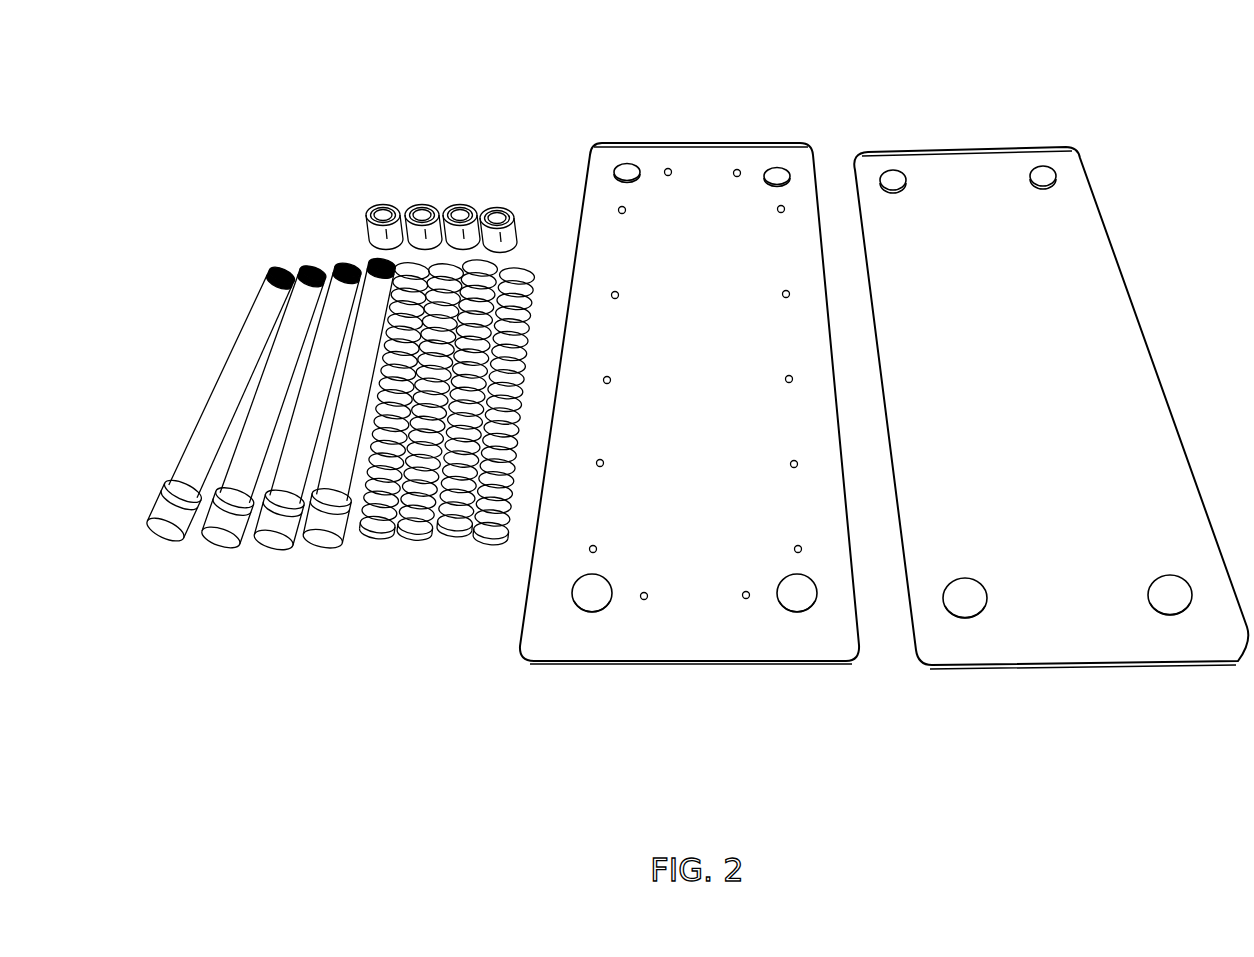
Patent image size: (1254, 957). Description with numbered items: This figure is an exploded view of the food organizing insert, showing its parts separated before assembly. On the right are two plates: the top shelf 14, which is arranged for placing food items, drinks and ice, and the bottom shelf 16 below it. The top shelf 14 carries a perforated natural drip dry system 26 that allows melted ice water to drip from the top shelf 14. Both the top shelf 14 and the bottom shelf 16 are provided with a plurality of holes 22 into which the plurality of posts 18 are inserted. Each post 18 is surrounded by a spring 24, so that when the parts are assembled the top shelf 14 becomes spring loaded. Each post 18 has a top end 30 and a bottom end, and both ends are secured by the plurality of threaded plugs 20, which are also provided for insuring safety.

The top shelf 14 is at (658, 631).
The bottom shelf 16 is at (1155, 372).
The posts 18 is at (273, 373).
The threaded plugs 20 is at (463, 203).
The holes 22 is at (773, 172).
The spring 24 is at (458, 535).
The perforated natural drip dry system 26 is at (746, 596).
The top end 30 is at (282, 268).